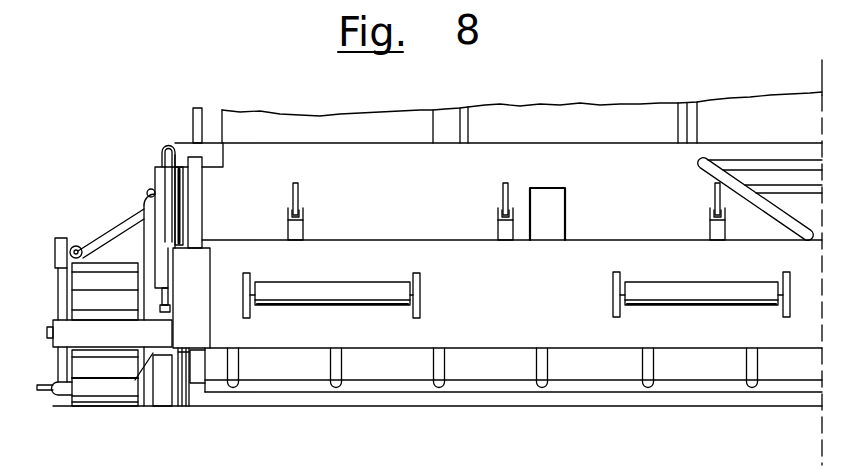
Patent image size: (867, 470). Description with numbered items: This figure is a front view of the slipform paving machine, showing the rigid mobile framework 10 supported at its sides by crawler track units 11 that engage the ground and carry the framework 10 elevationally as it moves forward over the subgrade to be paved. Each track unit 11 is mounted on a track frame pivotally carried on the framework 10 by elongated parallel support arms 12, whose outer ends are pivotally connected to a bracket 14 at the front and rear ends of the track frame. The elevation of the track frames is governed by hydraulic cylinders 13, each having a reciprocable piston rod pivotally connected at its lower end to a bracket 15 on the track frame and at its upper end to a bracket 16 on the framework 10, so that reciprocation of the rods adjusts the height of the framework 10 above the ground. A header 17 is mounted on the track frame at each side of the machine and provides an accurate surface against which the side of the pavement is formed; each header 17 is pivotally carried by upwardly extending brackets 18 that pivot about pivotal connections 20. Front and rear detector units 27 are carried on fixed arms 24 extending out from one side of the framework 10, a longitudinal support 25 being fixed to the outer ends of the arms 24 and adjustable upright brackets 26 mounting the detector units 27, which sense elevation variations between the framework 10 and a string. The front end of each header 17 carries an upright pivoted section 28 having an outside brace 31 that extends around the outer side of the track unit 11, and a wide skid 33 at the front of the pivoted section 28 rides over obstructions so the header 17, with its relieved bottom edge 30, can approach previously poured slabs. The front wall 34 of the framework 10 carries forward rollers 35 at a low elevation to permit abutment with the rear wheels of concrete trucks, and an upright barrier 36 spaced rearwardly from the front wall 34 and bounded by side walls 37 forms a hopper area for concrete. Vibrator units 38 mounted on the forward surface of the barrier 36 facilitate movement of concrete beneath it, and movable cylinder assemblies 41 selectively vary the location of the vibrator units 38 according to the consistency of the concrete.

The rigid mobile framework 10 is at (295, 97).
The crawler track unit 11 is at (118, 412).
The support arm 12 is at (184, 197).
The hydraulic cylinder 13 is at (163, 178).
The bracket 14 is at (146, 204).
The bracket 15 is at (146, 355).
The bracket 16 is at (187, 148).
The header 17 is at (187, 397).
The bracket 18 is at (180, 348).
The pivotal connection 20 is at (148, 192).
The fixed arm 24 is at (103, 241).
The longitudinal support 25 is at (83, 252).
The adjustable upright bracket 26 is at (62, 298).
The detector unit 27 is at (57, 397).
The pivoted section 28 is at (182, 407).
The relieved bottom edge 30 is at (186, 359).
The outside brace 31 is at (112, 341).
The skid 33 is at (163, 387).
The front wall 34 is at (511, 303).
The forward roller 35 is at (330, 301).
The upright barrier 36 is at (402, 191).
The side wall 37 is at (202, 188).
The vibrator unit 38 is at (330, 367).
The movable cylinder assembly 41 is at (293, 227).